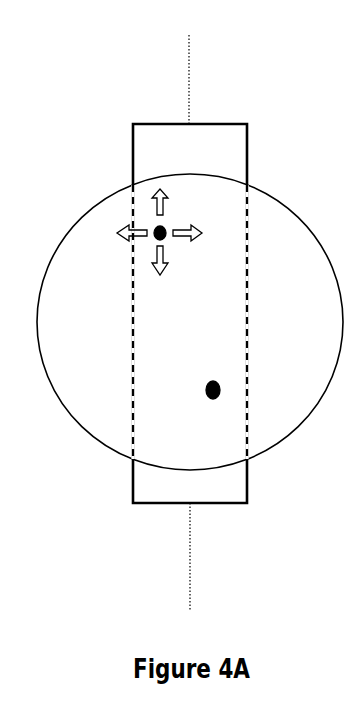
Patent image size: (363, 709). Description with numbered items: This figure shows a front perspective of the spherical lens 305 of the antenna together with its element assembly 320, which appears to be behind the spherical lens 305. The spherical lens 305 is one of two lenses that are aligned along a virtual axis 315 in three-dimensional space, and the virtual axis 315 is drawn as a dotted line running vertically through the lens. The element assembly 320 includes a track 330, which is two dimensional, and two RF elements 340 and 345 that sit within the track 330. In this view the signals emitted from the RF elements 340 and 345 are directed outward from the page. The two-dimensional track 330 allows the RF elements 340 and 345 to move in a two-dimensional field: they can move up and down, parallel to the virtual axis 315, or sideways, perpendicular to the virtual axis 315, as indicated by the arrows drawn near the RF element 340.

The spherical lens 305 is at (60, 240).
The virtual axis 315 is at (187, 49).
The element assembly 320 is at (113, 143).
The track 330 is at (250, 133).
The RF element 340 is at (166, 227).
The RF element 345 is at (206, 383).